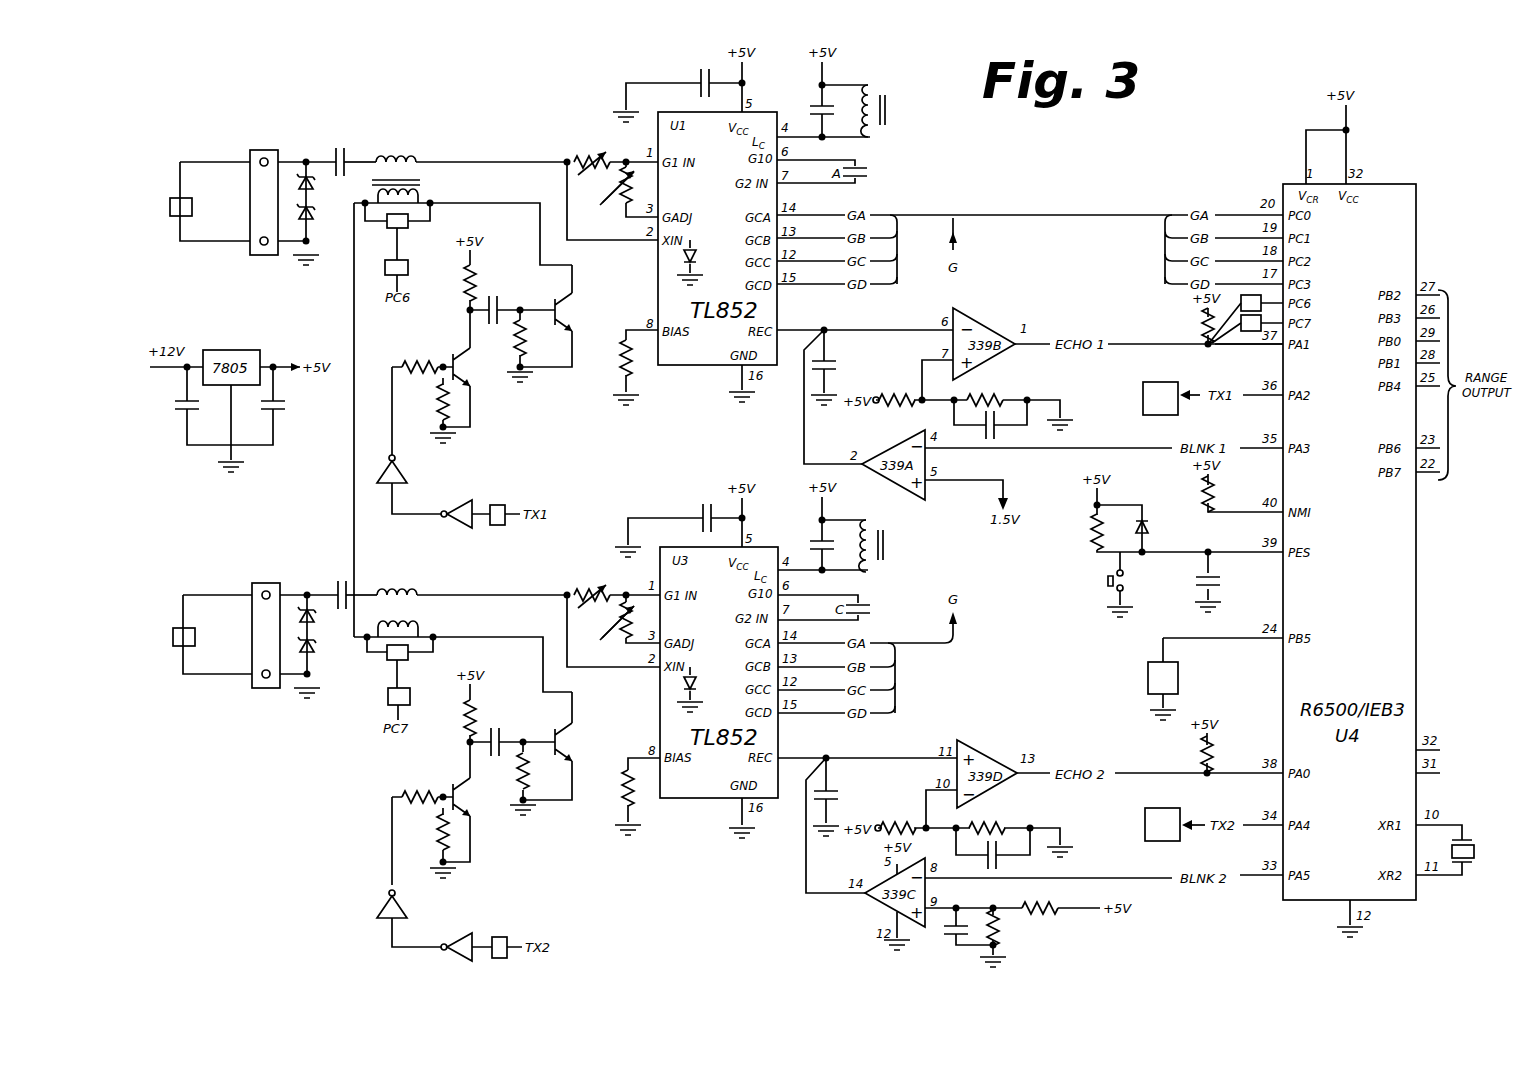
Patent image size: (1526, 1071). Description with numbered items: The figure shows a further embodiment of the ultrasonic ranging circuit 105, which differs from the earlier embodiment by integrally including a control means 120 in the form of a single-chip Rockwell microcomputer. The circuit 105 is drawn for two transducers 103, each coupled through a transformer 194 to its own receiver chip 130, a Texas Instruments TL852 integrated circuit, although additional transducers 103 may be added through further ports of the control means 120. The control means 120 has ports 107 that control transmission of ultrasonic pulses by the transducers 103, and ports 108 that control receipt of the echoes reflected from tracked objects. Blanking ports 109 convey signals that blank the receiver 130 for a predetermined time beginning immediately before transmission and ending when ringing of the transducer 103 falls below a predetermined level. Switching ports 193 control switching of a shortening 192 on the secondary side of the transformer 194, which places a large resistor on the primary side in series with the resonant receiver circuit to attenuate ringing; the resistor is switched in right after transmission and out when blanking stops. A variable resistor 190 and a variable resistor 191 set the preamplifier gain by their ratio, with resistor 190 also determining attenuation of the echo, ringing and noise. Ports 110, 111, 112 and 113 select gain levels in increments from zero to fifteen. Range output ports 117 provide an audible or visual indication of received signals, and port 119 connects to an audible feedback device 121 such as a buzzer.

The transducer 103 is at (178, 218).
The circuit 105 is at (1432, 110).
The ports 107 is at (1252, 398).
The ports 108 is at (1258, 345).
The blanking ports 109 is at (1258, 452).
The port 110 is at (1232, 214).
The port 111 is at (1178, 240).
The port 112 is at (1175, 263).
The port 113 is at (1183, 285).
The range output ports 117 is at (1468, 355).
The port 119 is at (1238, 641).
The control means 120 is at (1416, 548).
The audible feedback device 121 is at (1148, 688).
The receiver chip 130 is at (697, 367).
The variable resistor 190 is at (576, 150).
The variable resistor 191 is at (606, 415).
The shortening 192 is at (410, 217).
The switching ports 193 is at (408, 268).
The transformer 194 is at (388, 160).